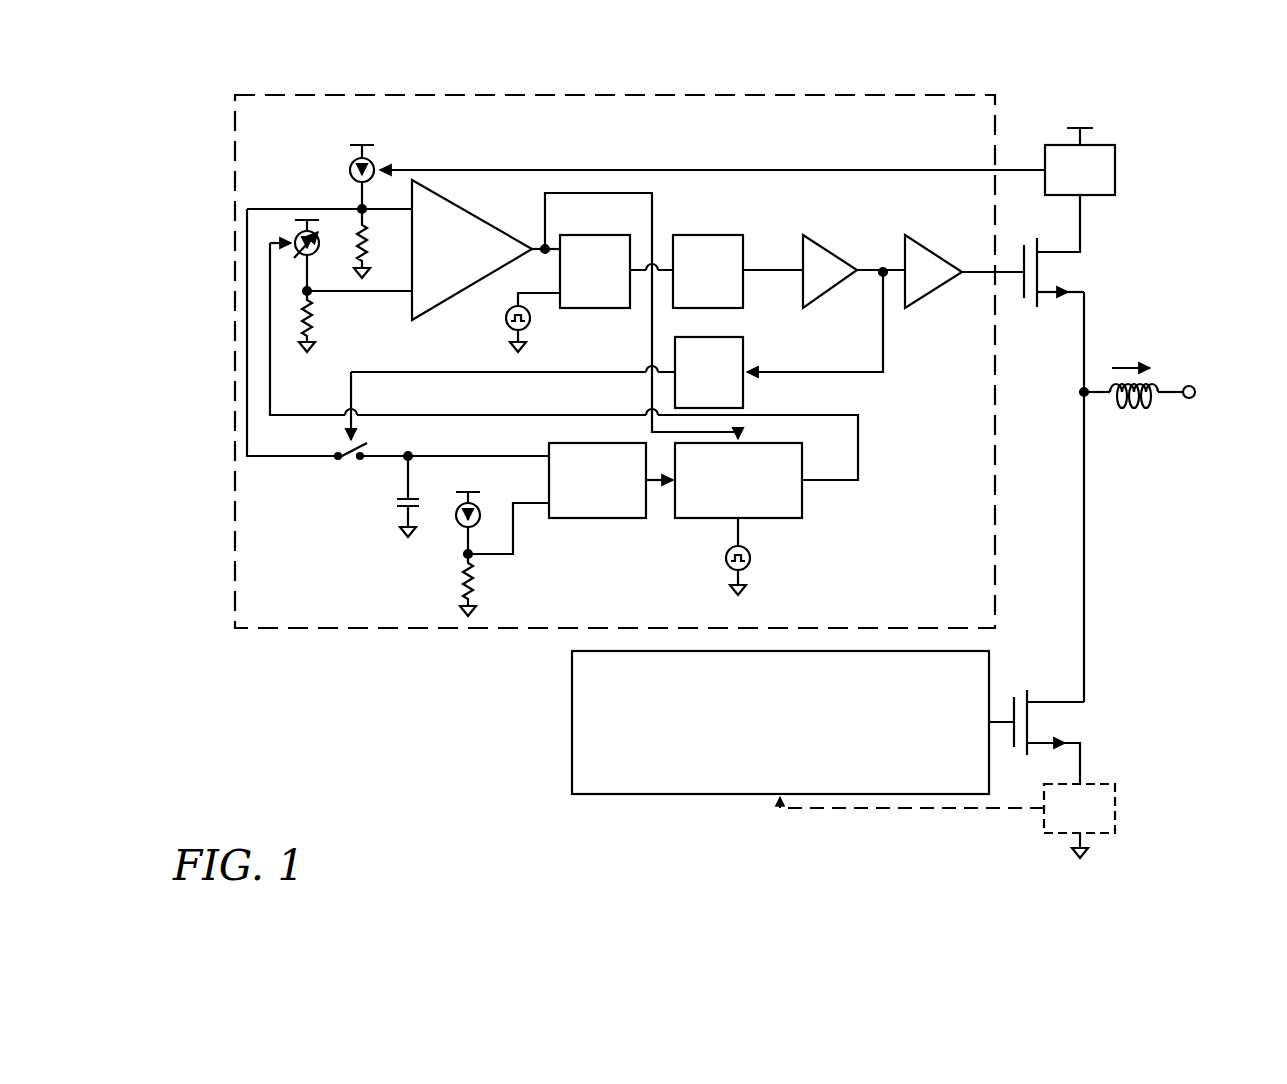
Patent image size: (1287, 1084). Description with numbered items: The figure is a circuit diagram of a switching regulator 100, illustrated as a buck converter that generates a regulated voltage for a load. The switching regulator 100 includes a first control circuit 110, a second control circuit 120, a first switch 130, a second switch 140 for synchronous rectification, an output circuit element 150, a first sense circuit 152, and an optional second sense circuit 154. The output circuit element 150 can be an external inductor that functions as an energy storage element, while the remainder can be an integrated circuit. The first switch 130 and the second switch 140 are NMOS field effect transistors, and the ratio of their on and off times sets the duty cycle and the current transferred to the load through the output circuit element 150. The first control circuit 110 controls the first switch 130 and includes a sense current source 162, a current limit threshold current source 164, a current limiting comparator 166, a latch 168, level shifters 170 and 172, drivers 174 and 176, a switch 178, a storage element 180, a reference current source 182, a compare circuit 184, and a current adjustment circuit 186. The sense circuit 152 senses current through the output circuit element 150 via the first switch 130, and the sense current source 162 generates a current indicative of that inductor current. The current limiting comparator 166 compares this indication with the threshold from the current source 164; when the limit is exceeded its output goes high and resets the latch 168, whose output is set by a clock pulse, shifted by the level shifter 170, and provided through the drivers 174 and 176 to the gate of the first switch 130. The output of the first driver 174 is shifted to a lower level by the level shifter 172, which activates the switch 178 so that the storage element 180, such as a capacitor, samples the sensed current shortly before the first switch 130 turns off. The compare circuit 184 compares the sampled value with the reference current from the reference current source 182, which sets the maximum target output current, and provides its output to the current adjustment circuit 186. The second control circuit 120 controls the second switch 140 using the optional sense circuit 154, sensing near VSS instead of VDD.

The switching regulator 100 is at (245, 64).
The first control circuit 110 is at (637, 95).
The second control circuit 120 is at (997, 665).
The first switch 130 is at (1055, 286).
The second switch 140 is at (1058, 736).
The output circuit element 150 is at (1133, 410).
The first sense circuit 152 is at (1103, 147).
The second sense circuit 154 is at (1103, 788).
The sense current source 162 is at (376, 162).
The current limit threshold current source 164 is at (310, 257).
The current limiting comparator 166 is at (472, 213).
The latch 168 is at (591, 236).
The level shifter 170 is at (705, 235).
The level shifter 172 is at (733, 338).
The first driver 174 is at (835, 251).
The second driver 176 is at (933, 256).
The switch 178 is at (351, 461).
The storage element 180 is at (418, 490).
The reference current source 182 is at (462, 532).
The compare circuit 184 is at (587, 443).
The current adjustment circuit 186 is at (790, 443).